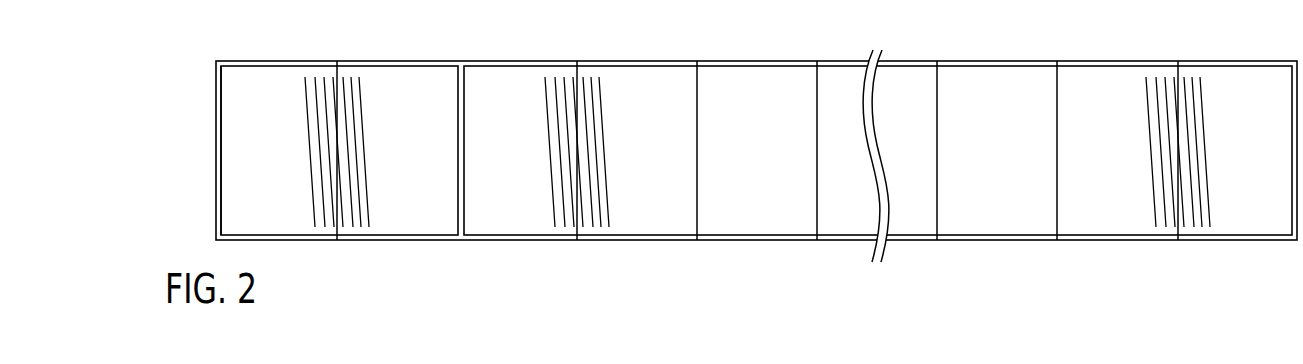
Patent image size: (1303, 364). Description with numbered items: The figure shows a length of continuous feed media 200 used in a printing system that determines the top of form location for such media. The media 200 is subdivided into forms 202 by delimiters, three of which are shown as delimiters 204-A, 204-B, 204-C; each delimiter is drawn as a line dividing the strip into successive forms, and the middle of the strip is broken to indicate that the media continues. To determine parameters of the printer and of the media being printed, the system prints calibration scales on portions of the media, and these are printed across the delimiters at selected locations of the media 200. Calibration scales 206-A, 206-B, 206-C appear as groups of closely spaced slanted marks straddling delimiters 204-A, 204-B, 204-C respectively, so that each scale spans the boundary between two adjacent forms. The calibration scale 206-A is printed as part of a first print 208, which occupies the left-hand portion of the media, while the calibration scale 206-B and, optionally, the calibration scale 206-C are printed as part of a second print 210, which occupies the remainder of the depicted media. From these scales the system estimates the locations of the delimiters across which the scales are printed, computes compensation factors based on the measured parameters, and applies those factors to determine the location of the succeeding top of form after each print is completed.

The continuous feed media 200 is at (709, 51).
The form 202 is at (282, 217).
The delimiter 204-A is at (337, 229).
The delimiter 204-B is at (577, 229).
The delimiter 204-C is at (1178, 229).
The calibration scale 206-A is at (305, 93).
The calibration scale 206-B is at (546, 95).
The calibration scale 206-C is at (1147, 95).
The first print 208 is at (238, 66).
The second print 210 is at (475, 65).